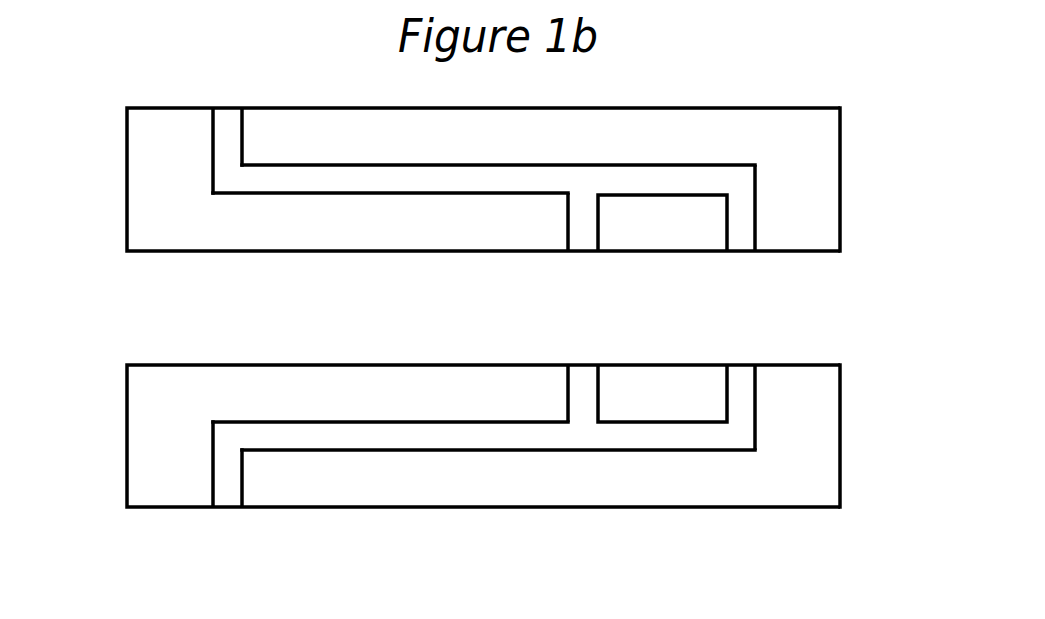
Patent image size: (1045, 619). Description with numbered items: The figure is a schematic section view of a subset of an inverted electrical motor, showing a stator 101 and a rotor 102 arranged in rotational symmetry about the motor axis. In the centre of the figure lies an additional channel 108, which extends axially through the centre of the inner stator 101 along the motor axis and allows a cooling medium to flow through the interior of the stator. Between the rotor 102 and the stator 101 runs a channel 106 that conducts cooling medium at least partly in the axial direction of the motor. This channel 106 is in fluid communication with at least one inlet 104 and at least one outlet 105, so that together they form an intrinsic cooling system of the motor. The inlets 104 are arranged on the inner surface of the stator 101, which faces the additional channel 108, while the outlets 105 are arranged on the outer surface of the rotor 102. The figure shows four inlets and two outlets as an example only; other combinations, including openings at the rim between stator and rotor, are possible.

The stator 101 is at (127, 163).
The rotor 102 is at (841, 165).
The inlet 104 is at (585, 365).
The outlet 105 is at (225, 107).
The channel 106 is at (344, 180).
The additional channel 108 is at (840, 307).